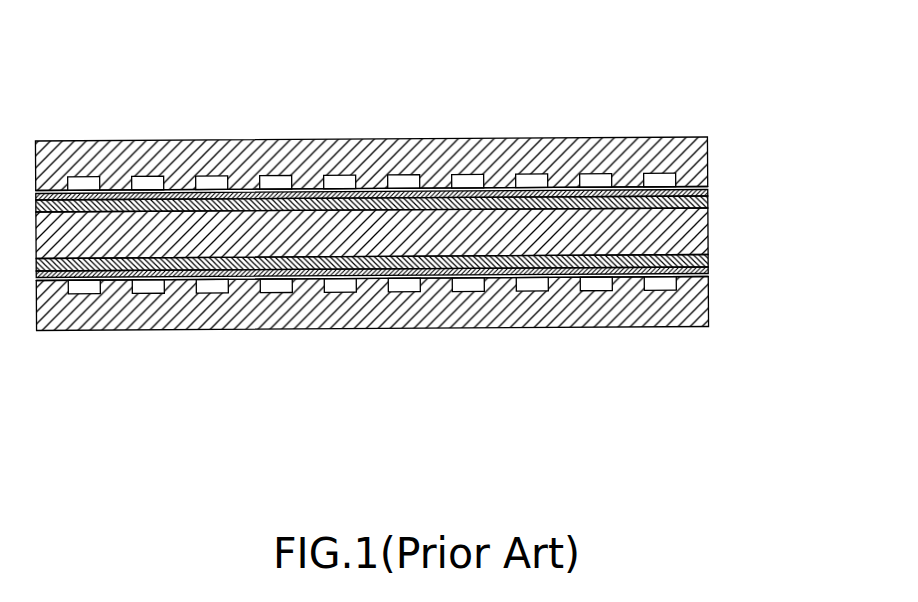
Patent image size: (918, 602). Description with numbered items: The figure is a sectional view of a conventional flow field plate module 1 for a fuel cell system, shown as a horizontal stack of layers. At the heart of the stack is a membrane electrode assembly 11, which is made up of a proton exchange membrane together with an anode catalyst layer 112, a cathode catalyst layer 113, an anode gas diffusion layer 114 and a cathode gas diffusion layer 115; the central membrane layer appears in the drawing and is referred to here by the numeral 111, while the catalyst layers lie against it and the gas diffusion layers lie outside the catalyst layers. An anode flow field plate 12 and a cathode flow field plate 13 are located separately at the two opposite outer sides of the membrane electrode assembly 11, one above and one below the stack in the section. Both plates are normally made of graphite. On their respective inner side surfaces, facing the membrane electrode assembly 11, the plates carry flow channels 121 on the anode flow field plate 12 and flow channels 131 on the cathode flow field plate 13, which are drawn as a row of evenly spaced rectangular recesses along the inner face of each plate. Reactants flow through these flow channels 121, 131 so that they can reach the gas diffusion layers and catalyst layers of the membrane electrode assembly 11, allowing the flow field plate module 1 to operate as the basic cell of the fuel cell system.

The flow field plate module 1 is at (745, 90).
The membrane electrode assembly 11 is at (454, 232).
The substrate 111 is at (708, 233).
The anode catalyst layer 112 is at (708, 264).
The cathode catalyst layer 113 is at (708, 205).
The anode gas diffusion layer 114 is at (418, 282).
The cathode gas diffusion layer 115 is at (708, 194).
The anode flow field plate 12 is at (411, 341).
The flow channels 121 is at (593, 288).
The cathode flow field plate 13 is at (410, 128).
The flow channels 131 is at (593, 182).